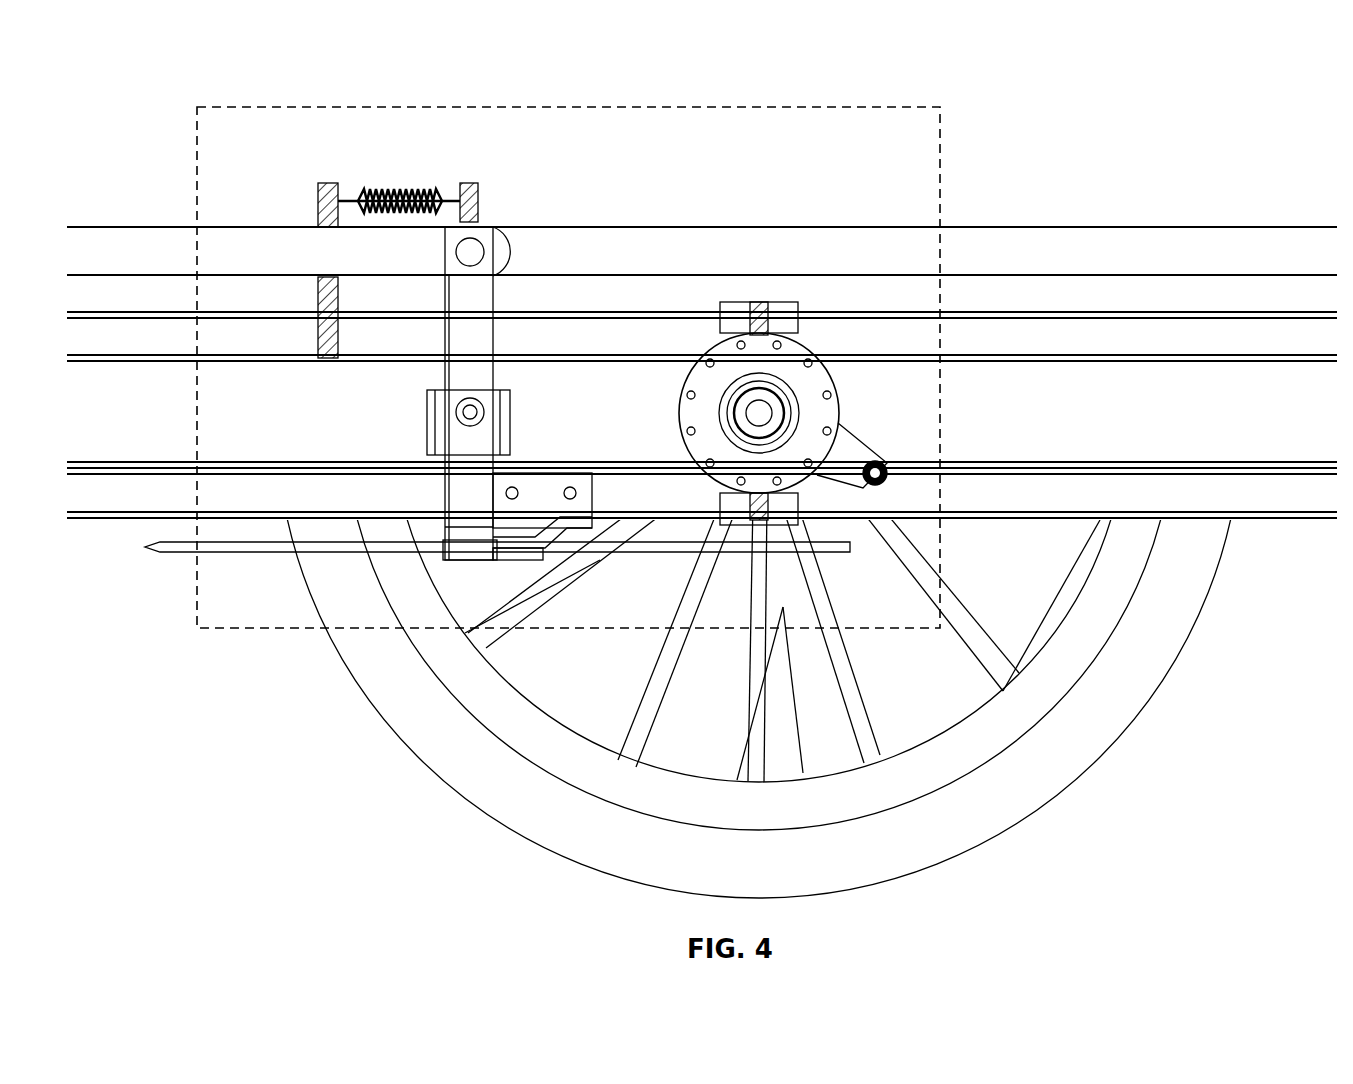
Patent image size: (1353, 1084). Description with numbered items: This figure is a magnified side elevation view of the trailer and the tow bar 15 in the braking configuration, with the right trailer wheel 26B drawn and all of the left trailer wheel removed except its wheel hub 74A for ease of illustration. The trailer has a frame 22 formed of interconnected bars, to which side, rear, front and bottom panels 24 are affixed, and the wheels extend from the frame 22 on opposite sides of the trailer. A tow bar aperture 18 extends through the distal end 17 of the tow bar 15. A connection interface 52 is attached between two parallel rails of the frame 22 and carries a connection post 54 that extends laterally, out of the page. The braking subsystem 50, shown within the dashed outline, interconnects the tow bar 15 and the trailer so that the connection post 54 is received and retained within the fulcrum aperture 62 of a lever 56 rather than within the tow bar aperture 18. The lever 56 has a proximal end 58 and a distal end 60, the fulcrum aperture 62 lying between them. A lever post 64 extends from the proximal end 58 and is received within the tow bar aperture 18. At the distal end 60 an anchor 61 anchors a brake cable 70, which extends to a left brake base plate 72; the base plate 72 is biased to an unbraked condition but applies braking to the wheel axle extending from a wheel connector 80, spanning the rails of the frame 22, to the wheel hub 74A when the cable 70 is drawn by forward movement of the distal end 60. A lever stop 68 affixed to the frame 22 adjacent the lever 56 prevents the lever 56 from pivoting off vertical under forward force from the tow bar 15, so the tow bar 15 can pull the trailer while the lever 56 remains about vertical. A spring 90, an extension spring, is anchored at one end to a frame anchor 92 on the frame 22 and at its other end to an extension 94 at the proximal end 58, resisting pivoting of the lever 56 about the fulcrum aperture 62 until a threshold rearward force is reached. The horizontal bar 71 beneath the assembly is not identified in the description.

The tow bar 15 is at (77, 243).
The distal end 17 is at (512, 262).
The tow bar aperture 18 is at (482, 248).
The frame 22 is at (1212, 335).
The panels 24 is at (997, 273).
The right trailer wheel 26B is at (577, 825).
The braking subsystem 50 is at (940, 107).
The connection interface 52 is at (507, 433).
The connection post 54 is at (447, 397).
The lever 56 is at (477, 330).
The proximal end 58 is at (482, 222).
The distal end 60 is at (465, 525).
The anchor 61 is at (483, 550).
The fulcrum aperture 62 is at (478, 408).
The lever post 64 is at (462, 250).
The lever stop 68 is at (575, 472).
The brake cable 70 is at (607, 527).
The bar 71 is at (755, 543).
The left brake base plate 72 is at (860, 452).
The wheel hub 74A is at (807, 368).
The wheel connector 80 is at (788, 312).
The spring 90 is at (390, 190).
The frame anchor 92 is at (318, 200).
The extension 94 is at (468, 188).